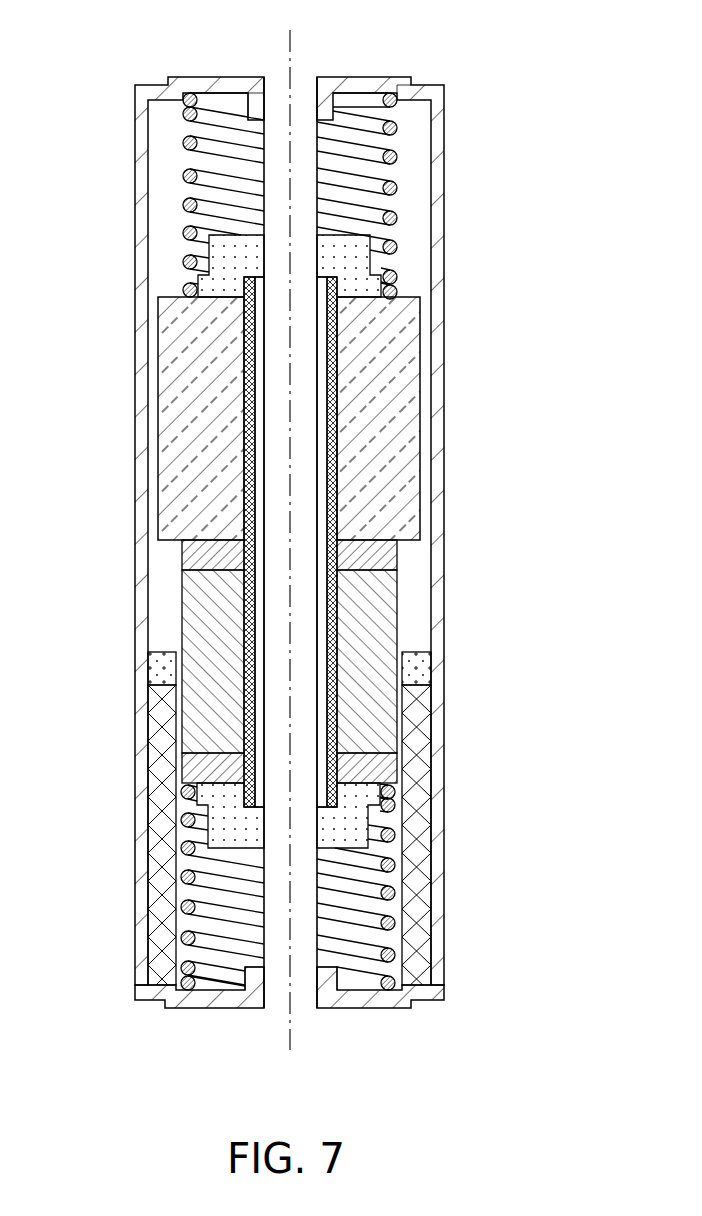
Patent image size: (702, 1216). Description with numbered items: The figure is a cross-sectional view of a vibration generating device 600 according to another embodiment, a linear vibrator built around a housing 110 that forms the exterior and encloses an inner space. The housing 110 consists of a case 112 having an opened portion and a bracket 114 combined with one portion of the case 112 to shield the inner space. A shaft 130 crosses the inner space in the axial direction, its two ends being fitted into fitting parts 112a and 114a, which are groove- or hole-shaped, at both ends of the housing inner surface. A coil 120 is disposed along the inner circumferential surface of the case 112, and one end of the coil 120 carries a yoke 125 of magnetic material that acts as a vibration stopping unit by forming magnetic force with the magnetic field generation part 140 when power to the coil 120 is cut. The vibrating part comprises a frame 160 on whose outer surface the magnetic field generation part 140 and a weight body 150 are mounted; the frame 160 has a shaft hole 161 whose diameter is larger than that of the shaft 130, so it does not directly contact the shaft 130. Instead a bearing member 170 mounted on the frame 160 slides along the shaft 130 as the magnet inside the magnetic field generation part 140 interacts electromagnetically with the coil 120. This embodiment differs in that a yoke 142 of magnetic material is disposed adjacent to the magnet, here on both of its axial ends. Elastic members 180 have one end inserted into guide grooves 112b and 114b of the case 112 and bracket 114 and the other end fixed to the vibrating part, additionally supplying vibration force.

The vibration generating device 600 is at (78, 66).
The housing 110 is at (365, 546).
The case 112 is at (325, 497).
The fitting part 112a is at (322, 96).
The guide groove 112b is at (391, 92).
The bracket 114 is at (325, 1024).
The fitting part 114a is at (315, 998).
The guide groove 114b is at (393, 991).
The coil 120 is at (416, 810).
The yoke 125 is at (420, 667).
The shaft 130 is at (308, 140).
The magnetic field generation part 140 is at (377, 598).
The yoke 142 is at (380, 557).
The weight body 150 is at (400, 433).
The frame 160 is at (337, 328).
The shaft hole 161 is at (350, 373).
The bearing member 170 is at (355, 253).
The elastic member 180 is at (397, 212).